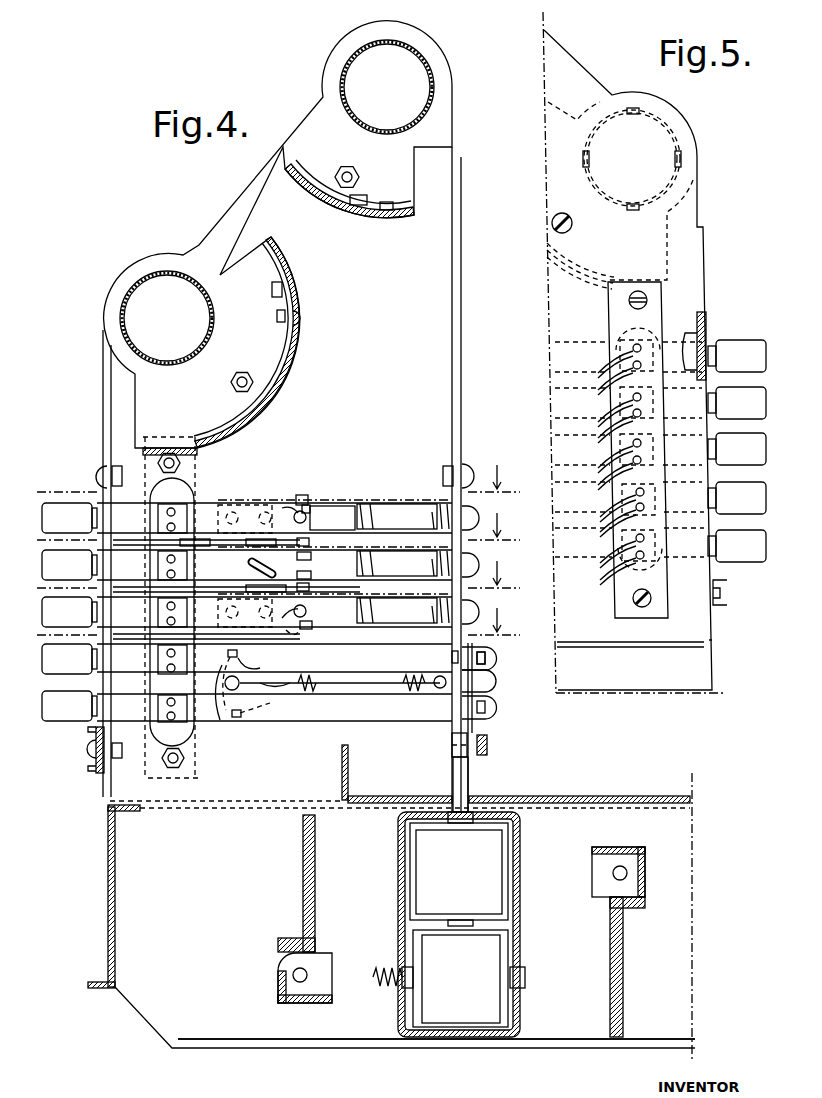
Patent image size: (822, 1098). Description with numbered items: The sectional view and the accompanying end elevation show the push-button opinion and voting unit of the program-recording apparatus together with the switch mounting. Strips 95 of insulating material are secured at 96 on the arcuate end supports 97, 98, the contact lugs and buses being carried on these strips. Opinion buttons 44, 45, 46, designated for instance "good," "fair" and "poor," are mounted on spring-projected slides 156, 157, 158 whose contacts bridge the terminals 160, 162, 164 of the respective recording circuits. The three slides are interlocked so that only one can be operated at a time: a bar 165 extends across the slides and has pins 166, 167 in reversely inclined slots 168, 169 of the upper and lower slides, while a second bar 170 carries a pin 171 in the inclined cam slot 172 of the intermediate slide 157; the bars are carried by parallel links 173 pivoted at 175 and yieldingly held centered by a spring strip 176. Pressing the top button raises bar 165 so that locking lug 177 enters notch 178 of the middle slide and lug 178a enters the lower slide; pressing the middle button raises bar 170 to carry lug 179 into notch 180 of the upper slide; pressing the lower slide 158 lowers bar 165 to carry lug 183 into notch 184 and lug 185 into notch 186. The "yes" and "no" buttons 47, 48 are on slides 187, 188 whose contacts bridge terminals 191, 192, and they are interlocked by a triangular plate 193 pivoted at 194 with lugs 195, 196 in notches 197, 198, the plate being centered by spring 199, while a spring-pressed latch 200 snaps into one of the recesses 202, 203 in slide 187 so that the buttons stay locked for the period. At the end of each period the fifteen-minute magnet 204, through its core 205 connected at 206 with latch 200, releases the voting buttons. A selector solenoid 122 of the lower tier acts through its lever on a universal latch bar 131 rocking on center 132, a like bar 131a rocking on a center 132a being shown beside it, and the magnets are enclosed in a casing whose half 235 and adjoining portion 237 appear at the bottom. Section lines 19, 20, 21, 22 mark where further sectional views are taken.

In FIG. 4, the section line 19 is at (281, 483).
In FIG. 4, the section line 20 is at (281, 531).
In FIG. 4, the section line 21 is at (281, 579).
In FIG. 4, the section line 22 is at (283, 626).
In FIG. 4, the opinion button 44 is at (69, 518).
In FIG. 5, the opinion button 44 is at (754, 362).
In FIG. 4, the opinion button 45 is at (69, 565).
In FIG. 5, the opinion button 45 is at (754, 410).
In FIG. 4, the opinion button 46 is at (69, 612).
In FIG. 5, the opinion button 46 is at (756, 457).
In FIG. 4, the yes voting button 47 is at (69, 659).
In FIG. 5, the yes voting button 47 is at (756, 506).
In FIG. 4, the no voting button 48 is at (69, 706).
In FIG. 5, the no voting button 48 is at (756, 554).
In FIG. 4, the insulating strips 95 is at (394, 220).
In FIG. 4, the securing point 96 is at (296, 288).
In FIG. 4, the arcuate end support 97 is at (278, 252).
In FIG. 4, the arcuate end support 98 is at (412, 215).
In FIG. 4, the solenoid 122 is at (488, 961).
In FIG. 4, the universal latch bar 131 is at (295, 1005).
In FIG. 4, the bracket 131a is at (618, 847).
In FIG. 4, the center 132 is at (294, 971).
In FIG. 4, the pivot pin 132a is at (628, 877).
In FIG. 4, the spring projected slide 156 is at (418, 517).
In FIG. 4, the spring projected slide 157 is at (418, 564).
In FIG. 4, the spring projected slide 158 is at (418, 611).
In FIG. 4, the terminals 160 is at (167, 526).
In FIG. 5, the terminals 160 is at (640, 363).
In FIG. 4, the terminals 162 is at (167, 573).
In FIG. 5, the terminals 162 is at (641, 416).
In FIG. 4, the terminals 164 is at (167, 620).
In FIG. 5, the terminals 164 is at (641, 463).
In FIG. 4, the interlocking bar 165 is at (332, 518).
In FIG. 4, the pin 166 is at (297, 507).
In FIG. 4, the pin 167 is at (307, 613).
In FIG. 4, the inclined slot 168 is at (275, 508).
In FIG. 4, the inclined slot 169 is at (302, 629).
In FIG. 4, the second transverse bar 170 is at (260, 542).
In FIG. 4, the pin 171 is at (254, 588).
In FIG. 4, the inclined cam slot 172 is at (255, 566).
In FIG. 4, the parallel links 173 is at (264, 505).
In FIG. 4, the pivot 175 is at (231, 510).
In FIG. 4, the spring strip 176 is at (187, 542).
In FIG. 4, the locking lug 177 is at (310, 587).
In FIG. 4, the notch 178 is at (312, 575).
In FIG. 4, the lug 178a is at (302, 650).
In FIG. 4, the lug 179 is at (290, 630).
In FIG. 4, the notch 180 is at (250, 656).
In FIG. 4, the lug 183 is at (306, 497).
In FIG. 4, the notch 184 is at (310, 505).
In FIG. 4, the lug 185 is at (310, 542).
In FIG. 4, the notch 186 is at (312, 556).
In FIG. 4, the slide 187 is at (428, 658).
In FIG. 4, the slide 188 is at (428, 707).
In FIG. 4, the terminals 191 is at (167, 668).
In FIG. 5, the terminals 191 is at (644, 510).
In FIG. 4, the terminals 192 is at (167, 716).
In FIG. 5, the terminals 192 is at (644, 558).
In FIG. 4, the triangular plate 193 is at (304, 676).
In FIG. 4, the pivot 194 is at (220, 722).
In FIG. 4, the lug 195 is at (230, 650).
In FIG. 4, the lug 196 is at (240, 715).
In FIG. 4, the notch 197 is at (248, 684).
In FIG. 4, the notch 198 is at (268, 704).
In FIG. 4, the spring 199 is at (300, 722).
In FIG. 4, the spring pressed latch 200 is at (476, 686).
In FIG. 4, the locking recess 202 is at (454, 657).
In FIG. 4, the locking recess 203 is at (490, 664).
In FIG. 4, the fifteen-minute magnet 204 is at (495, 886).
In FIG. 4, the core 205 is at (468, 790).
In FIG. 4, the connection 206 is at (452, 760).
In FIG. 4, the casing half 235 is at (500, 1048).
In FIG. 4, the base plate 237 is at (433, 1048).